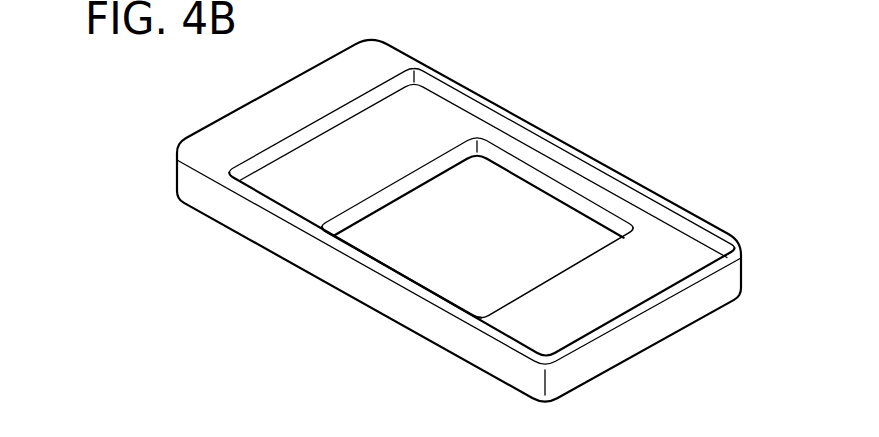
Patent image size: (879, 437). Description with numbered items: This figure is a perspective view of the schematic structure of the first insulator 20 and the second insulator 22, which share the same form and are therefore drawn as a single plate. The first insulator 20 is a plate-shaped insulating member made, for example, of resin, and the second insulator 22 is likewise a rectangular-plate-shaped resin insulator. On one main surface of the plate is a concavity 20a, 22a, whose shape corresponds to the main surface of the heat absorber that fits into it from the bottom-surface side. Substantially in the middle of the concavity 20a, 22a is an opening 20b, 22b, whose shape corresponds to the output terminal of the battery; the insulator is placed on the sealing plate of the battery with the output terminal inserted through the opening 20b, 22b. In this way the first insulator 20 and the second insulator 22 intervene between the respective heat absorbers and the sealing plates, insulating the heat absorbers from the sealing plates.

The first insulator 20 is at (475, 229).
The second insulator 22 is at (475, 229).
The concavity 20a is at (475, 221).
The concavity 22a is at (673, 231).
The opening 20b is at (479, 189).
The opening 22b is at (570, 195).